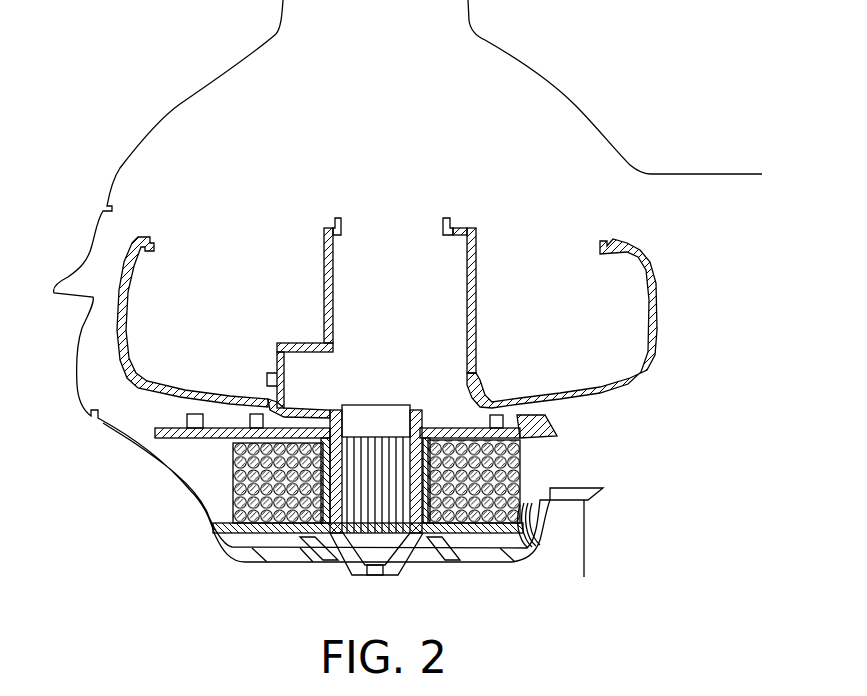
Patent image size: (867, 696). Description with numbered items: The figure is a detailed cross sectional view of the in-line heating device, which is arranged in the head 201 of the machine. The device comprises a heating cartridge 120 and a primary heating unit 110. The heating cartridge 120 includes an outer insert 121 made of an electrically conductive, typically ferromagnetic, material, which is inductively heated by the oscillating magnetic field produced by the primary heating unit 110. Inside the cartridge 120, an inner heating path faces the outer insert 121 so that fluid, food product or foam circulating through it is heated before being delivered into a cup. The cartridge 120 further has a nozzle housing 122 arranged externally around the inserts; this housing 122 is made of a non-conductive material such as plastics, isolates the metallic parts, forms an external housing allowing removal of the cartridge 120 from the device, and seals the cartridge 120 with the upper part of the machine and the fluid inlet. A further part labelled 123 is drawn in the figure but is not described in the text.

The head 201 is at (185, 128).
The primary heating unit 110 is at (527, 473).
The heating cartridge 120 is at (347, 558).
The outer insert 121 is at (415, 548).
The nozzle housing 122 is at (343, 406).
The bearing 123 is at (377, 567).